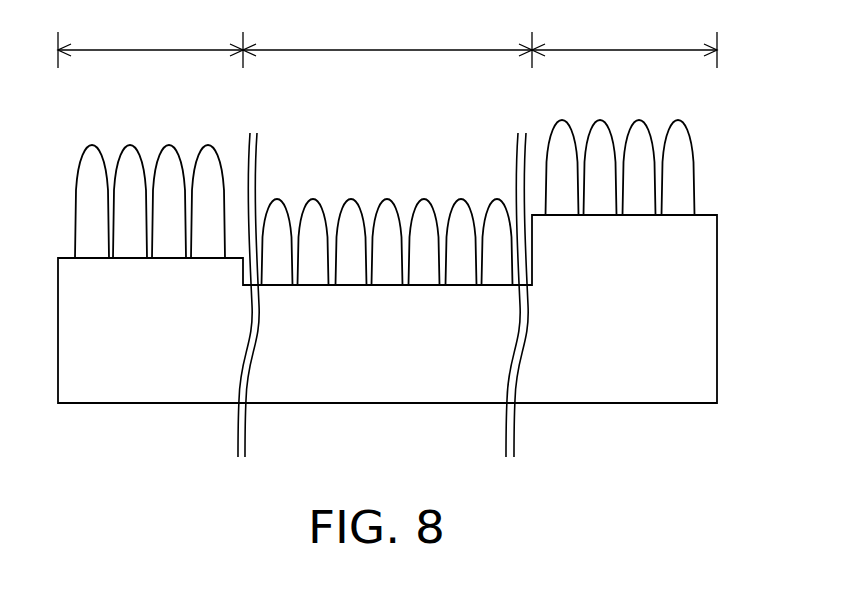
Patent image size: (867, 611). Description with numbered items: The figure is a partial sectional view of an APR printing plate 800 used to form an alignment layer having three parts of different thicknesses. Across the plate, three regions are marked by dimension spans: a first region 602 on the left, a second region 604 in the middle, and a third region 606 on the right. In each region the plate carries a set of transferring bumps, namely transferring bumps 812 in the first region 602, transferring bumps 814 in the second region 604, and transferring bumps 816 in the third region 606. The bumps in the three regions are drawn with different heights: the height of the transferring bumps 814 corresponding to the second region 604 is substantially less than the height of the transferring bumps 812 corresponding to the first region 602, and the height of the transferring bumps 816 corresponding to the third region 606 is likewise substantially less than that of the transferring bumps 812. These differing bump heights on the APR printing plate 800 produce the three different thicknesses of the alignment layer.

The APR printing plate 800 is at (777, 467).
The transferring bumps 812 is at (92, 188).
The transferring bumps 814 is at (277, 220).
The transferring bumps 816 is at (678, 163).
The first region 602 is at (150, 38).
The second region 604 is at (387, 38).
The third region 606 is at (624, 38).